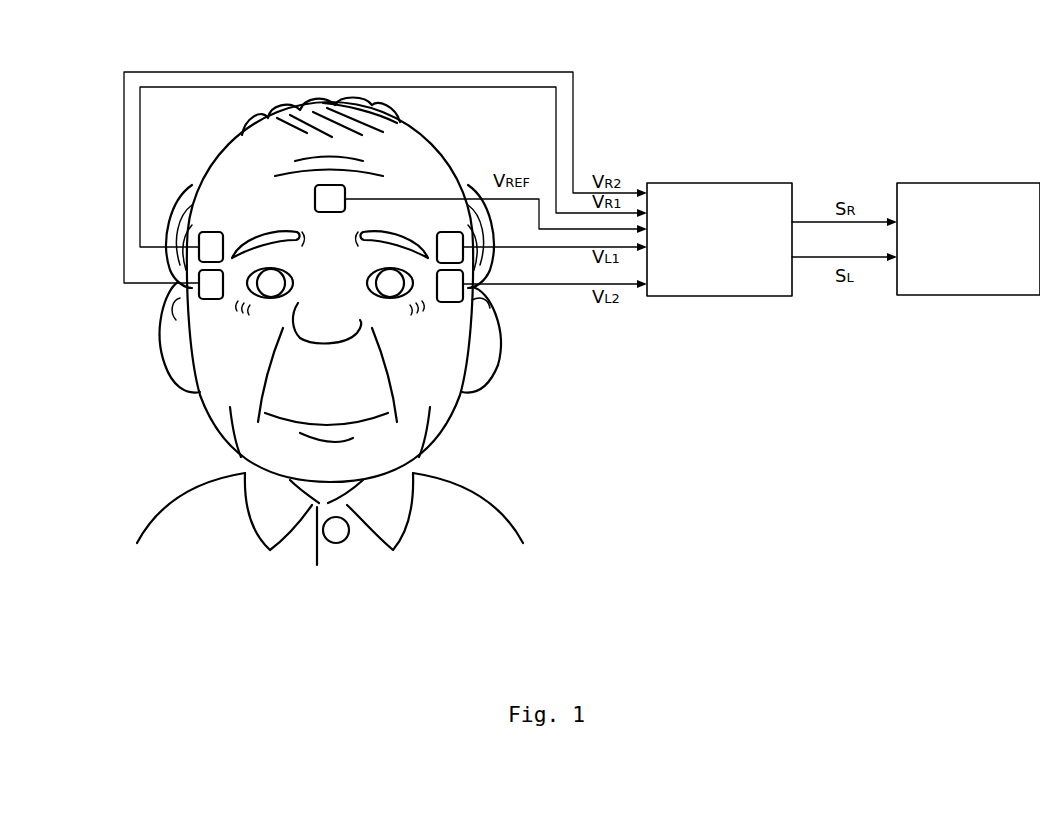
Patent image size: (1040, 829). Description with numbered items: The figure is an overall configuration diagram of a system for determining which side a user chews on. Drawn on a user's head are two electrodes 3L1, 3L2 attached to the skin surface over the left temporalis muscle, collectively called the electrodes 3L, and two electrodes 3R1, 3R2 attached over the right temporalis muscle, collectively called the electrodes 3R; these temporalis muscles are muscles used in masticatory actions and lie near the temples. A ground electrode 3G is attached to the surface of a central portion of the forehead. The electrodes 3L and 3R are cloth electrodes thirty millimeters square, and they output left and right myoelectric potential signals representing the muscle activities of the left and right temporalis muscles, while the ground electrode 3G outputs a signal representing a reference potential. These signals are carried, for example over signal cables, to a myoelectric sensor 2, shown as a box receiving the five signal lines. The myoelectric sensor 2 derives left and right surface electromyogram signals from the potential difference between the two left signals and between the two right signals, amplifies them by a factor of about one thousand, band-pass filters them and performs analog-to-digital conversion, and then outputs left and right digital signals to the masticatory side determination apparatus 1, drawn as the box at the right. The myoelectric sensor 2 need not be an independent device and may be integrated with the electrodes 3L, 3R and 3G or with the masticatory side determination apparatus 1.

The masticatory side determination apparatus 1 is at (969, 183).
The myoelectric sensor 2 is at (714, 183).
The ground electrode 3G is at (313, 200).
The electrodes (right) 3R is at (148, 287).
The electrode 3R1 is at (199, 250).
The electrode 3R2 is at (199, 287).
The electrodes (left) 3L is at (511, 286).
The electrode 3L1 is at (455, 247).
The electrode 3L2 is at (455, 287).